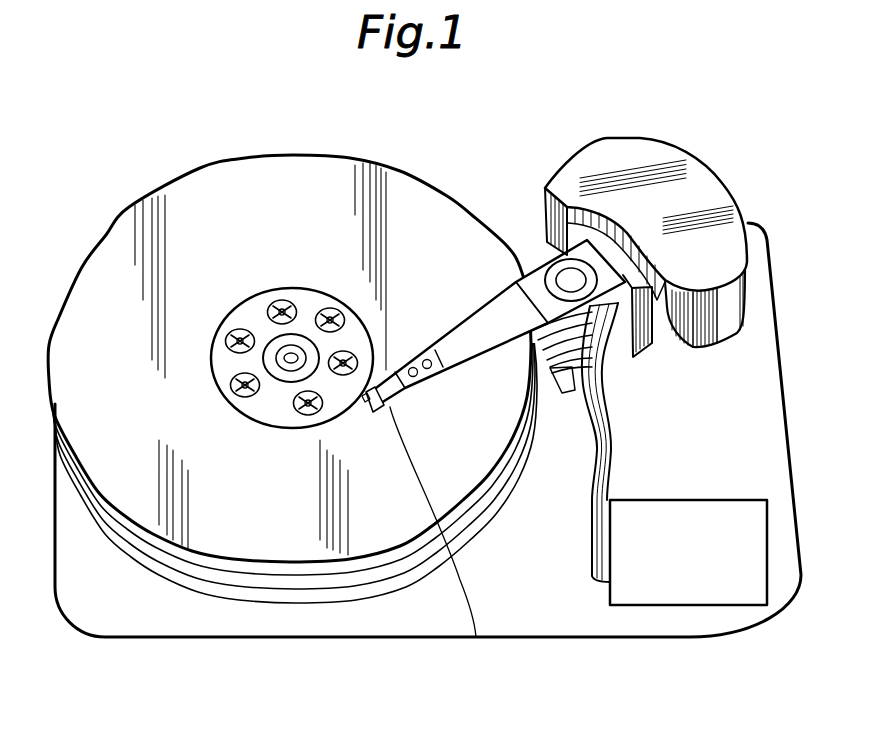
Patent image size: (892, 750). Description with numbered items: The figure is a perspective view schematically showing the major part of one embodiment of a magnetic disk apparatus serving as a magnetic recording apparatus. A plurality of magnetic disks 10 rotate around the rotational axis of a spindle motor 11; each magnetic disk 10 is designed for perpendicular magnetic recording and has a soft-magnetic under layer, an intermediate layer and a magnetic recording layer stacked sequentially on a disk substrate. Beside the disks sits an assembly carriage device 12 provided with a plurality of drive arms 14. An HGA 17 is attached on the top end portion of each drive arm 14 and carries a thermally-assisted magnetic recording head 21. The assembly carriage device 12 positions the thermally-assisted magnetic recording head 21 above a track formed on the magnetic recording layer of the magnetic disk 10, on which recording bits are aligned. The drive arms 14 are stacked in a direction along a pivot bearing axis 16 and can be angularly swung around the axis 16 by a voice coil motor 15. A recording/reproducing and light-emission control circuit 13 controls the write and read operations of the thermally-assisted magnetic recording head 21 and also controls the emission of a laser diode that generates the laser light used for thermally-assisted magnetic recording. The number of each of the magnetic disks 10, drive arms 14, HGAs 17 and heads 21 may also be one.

The magnetic disk 10 is at (127, 199).
The spindle motor 11 is at (286, 352).
The assembly carriage device 12 is at (618, 147).
The recording/reproducing and light-emission control circuit 13 is at (705, 605).
The drive arm 14 is at (477, 327).
The voice coil motor 15 is at (658, 320).
The pivot bearing axis 16 is at (571, 280).
The HGA 17 is at (437, 373).
The thermally-assisted magnetic recording head 21 is at (388, 402).